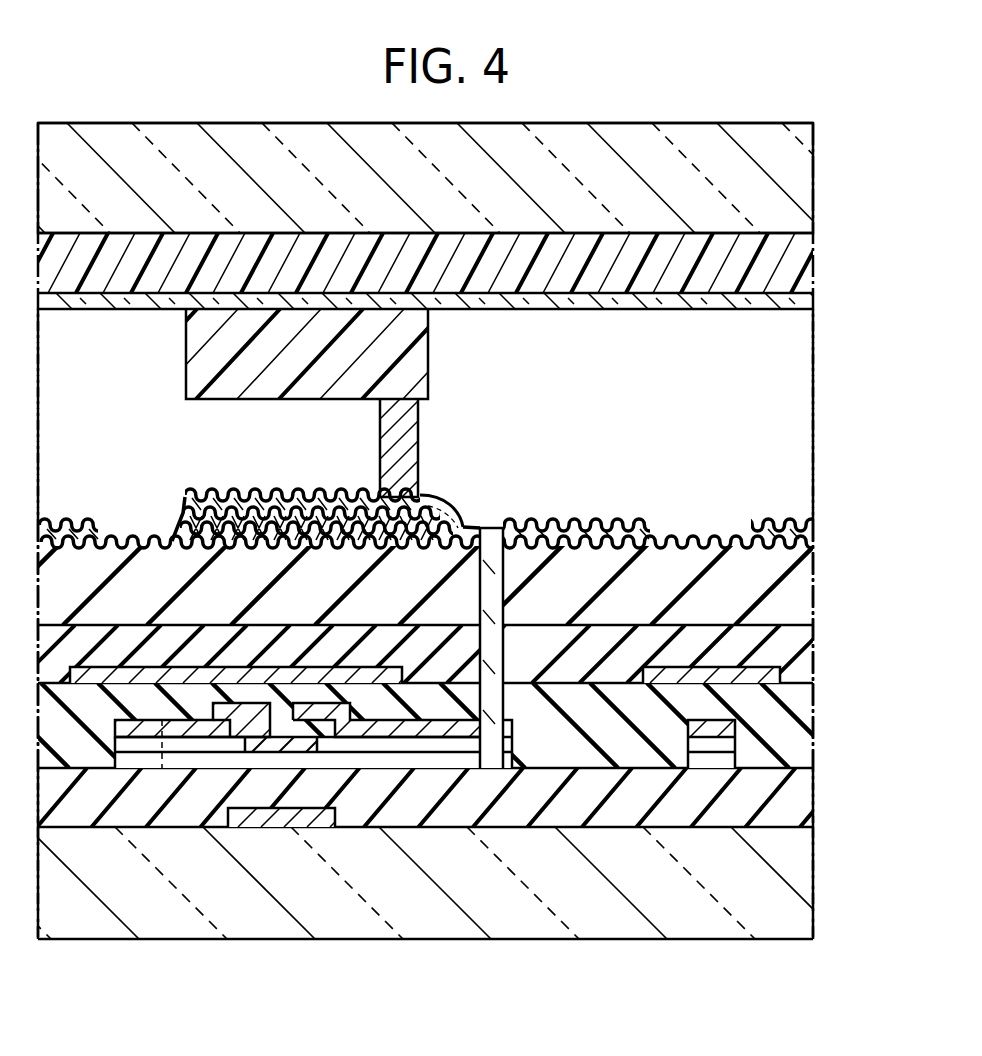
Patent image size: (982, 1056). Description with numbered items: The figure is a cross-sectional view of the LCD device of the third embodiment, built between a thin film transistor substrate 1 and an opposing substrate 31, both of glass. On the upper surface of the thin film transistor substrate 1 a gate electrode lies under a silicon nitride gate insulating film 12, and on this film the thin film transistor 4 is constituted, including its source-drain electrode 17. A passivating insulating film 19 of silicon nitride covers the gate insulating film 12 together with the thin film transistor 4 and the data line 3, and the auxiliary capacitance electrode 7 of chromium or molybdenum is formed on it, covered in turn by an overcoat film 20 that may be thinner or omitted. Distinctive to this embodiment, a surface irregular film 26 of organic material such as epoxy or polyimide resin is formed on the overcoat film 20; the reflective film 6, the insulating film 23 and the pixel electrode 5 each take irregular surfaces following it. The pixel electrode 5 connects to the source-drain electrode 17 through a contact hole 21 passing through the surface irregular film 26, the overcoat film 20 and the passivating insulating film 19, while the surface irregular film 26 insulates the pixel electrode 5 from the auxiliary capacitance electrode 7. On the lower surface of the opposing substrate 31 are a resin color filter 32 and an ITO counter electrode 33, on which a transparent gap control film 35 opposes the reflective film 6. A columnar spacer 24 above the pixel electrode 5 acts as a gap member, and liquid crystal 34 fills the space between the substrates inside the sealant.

The thin film transistor substrate 1 is at (798, 886).
The data line 3 is at (144, 774).
The thin film transistor 4 is at (333, 833).
The pixel electrode 5 is at (58, 521).
The reflective film 6 is at (237, 507).
The auxiliary capacitance electrode 7 is at (135, 679).
The gate insulating film 12 is at (798, 801).
The source-drain electrode 17 is at (498, 680).
The passivating insulating film 19 is at (798, 707).
The overcoat film 20 is at (800, 661).
The contact hole 21 is at (491, 587).
The insulating film 23 is at (280, 507).
The columnar spacer 24 is at (418, 438).
The surface irregular film 26 is at (798, 597).
The opposing substrate 31 is at (798, 162).
The color filter 32 is at (798, 260).
The counter electrode 33 is at (798, 300).
The liquid crystal 34 is at (798, 394).
The transparent gap control film 35 is at (416, 355).